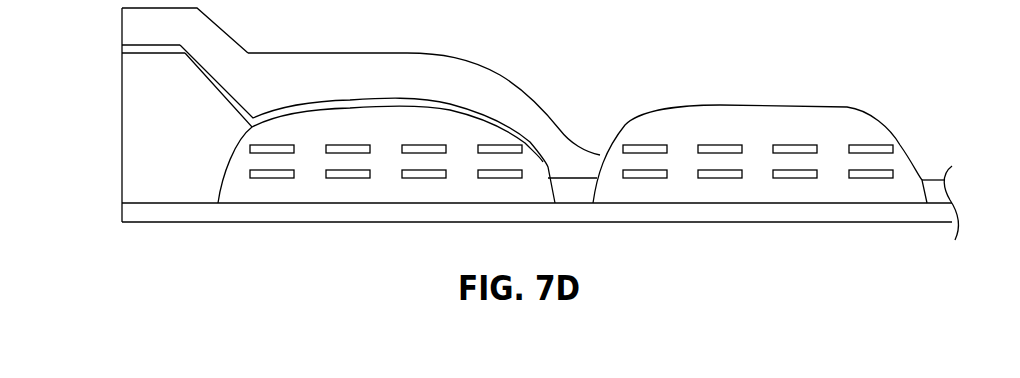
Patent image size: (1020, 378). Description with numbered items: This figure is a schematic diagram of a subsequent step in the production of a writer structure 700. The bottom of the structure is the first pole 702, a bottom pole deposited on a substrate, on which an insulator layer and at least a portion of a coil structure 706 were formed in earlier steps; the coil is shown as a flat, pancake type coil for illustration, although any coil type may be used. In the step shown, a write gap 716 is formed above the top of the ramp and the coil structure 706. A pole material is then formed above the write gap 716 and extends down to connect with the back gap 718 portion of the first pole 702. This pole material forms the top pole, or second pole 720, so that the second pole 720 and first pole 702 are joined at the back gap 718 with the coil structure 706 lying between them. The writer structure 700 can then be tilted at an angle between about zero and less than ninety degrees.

The writer structure 700 is at (500, 120).
The first pole 702 is at (138, 183).
The coil structure 706 is at (478, 149).
The write gap 716 is at (185, 53).
The back gap 718 is at (572, 163).
The second pole 720 is at (153, 37).